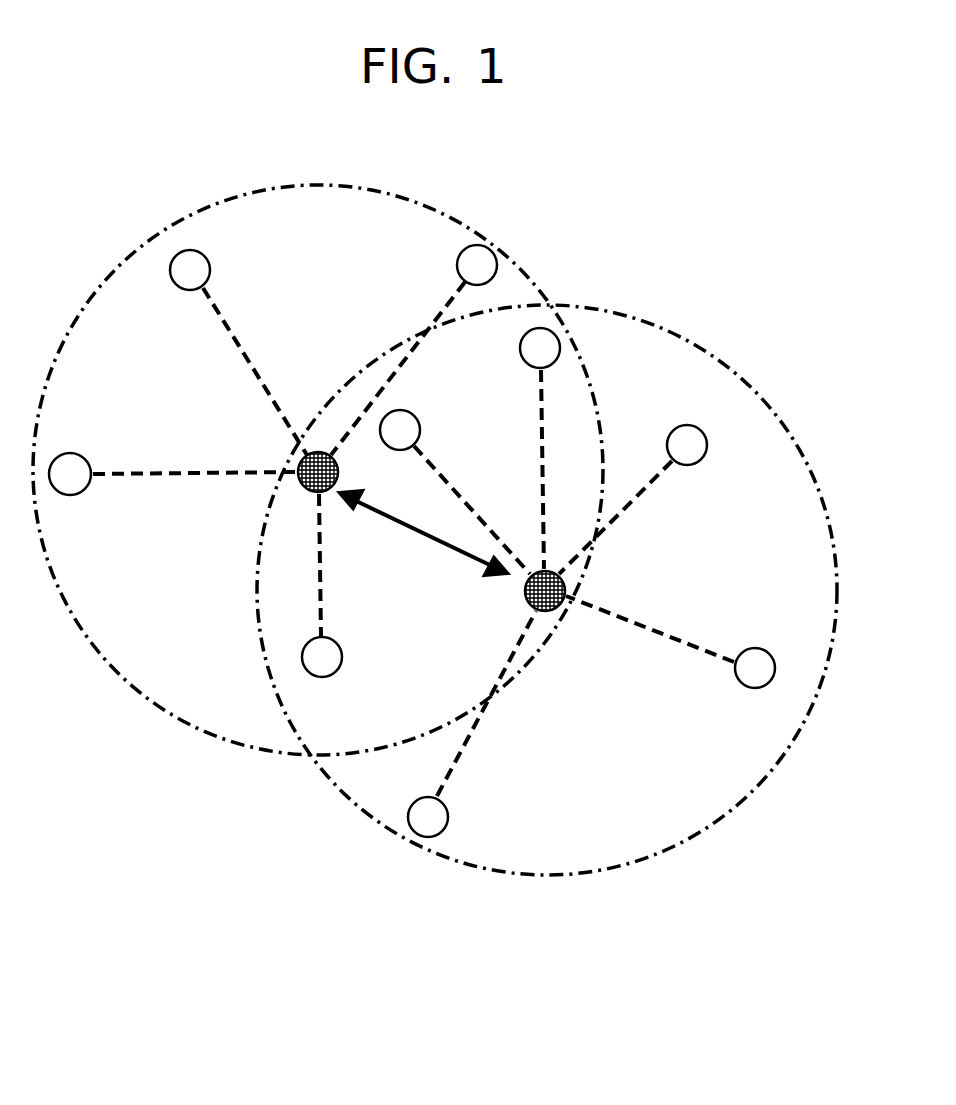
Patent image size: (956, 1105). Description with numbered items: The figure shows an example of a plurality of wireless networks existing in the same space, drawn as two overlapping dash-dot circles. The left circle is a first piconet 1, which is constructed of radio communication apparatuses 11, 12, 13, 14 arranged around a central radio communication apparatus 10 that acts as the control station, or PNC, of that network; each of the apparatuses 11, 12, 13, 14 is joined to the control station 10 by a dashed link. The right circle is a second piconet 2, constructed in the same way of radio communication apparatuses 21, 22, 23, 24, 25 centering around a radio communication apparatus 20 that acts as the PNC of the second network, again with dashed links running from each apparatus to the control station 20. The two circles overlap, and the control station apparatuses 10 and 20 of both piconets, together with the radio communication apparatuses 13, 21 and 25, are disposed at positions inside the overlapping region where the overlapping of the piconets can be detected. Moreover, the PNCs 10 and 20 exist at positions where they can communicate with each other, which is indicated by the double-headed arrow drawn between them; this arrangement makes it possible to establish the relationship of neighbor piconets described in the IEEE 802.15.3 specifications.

The first piconet 1 is at (170, 717).
The second piconet 2 is at (545, 878).
The radio communication apparatus acting as control station 10 is at (289, 461).
The radio communication apparatus 11 is at (210, 257).
The radio communication apparatus 12 is at (449, 264).
The radio communication apparatus 13 is at (322, 680).
The radio communication apparatus 14 is at (100, 463).
The radio communication apparatus acting as control station 20 is at (517, 595).
The radio communication apparatus 21 is at (522, 345).
The radio communication apparatus 22 is at (687, 424).
The radio communication apparatus 23 is at (764, 646).
The radio communication apparatus 24 is at (428, 795).
The radio communication apparatus 25 is at (430, 433).